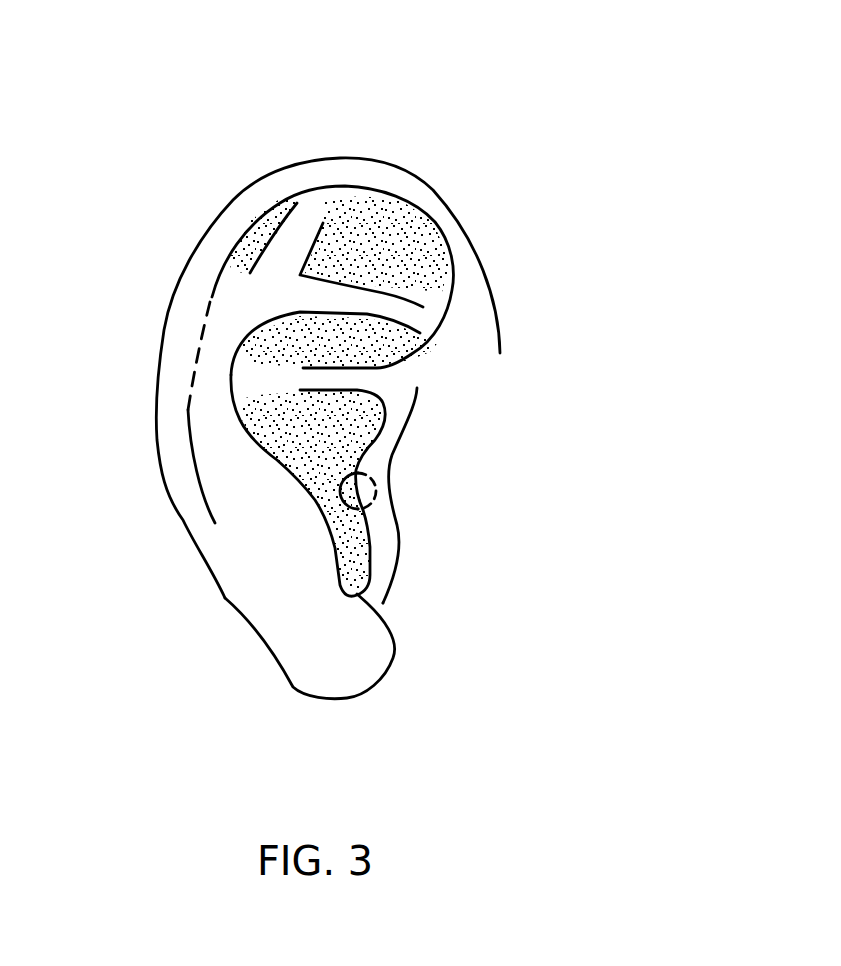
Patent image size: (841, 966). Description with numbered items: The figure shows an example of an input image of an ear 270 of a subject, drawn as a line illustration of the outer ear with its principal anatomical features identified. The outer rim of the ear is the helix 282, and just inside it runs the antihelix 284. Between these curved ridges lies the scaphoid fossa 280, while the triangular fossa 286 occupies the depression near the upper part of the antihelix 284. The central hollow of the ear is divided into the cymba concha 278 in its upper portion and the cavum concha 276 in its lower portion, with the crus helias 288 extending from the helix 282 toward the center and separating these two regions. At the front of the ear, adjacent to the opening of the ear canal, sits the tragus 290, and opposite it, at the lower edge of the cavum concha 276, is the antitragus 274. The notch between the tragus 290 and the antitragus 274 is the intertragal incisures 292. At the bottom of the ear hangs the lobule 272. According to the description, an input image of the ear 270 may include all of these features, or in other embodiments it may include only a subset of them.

The ear 270 is at (413, 57).
The lobule 272 is at (305, 647).
The antitragus 274 is at (287, 520).
The cavum concha 276 is at (283, 425).
The cymba concha 278 is at (307, 336).
The scaphoid fossa 280 is at (245, 233).
The helix 282 is at (290, 180).
The antihelix 284 is at (307, 227).
The triangular fossa 286 is at (400, 238).
The crus helias 288 is at (350, 380).
The tragus 290 is at (378, 517).
The intertragal incisures 292 is at (413, 603).